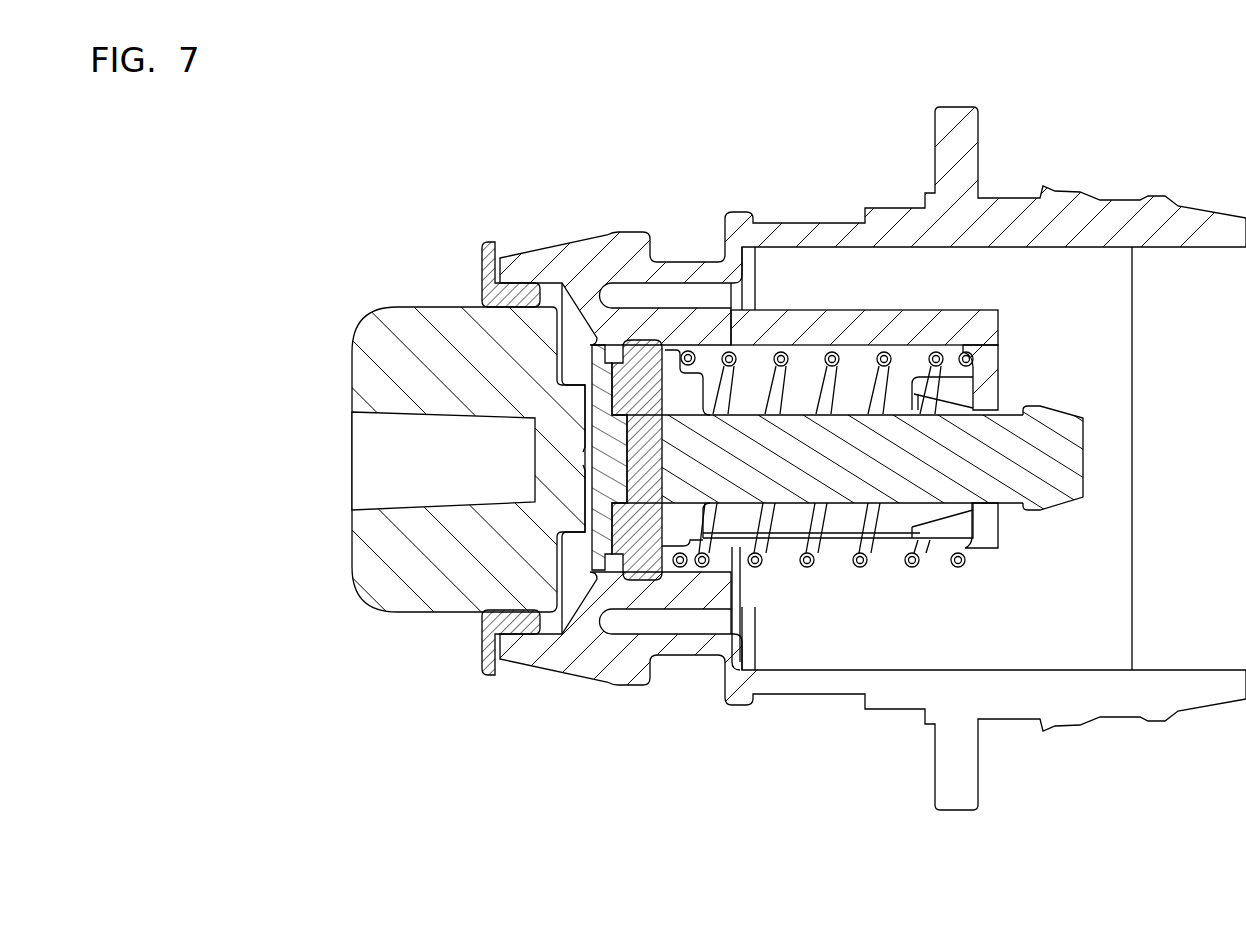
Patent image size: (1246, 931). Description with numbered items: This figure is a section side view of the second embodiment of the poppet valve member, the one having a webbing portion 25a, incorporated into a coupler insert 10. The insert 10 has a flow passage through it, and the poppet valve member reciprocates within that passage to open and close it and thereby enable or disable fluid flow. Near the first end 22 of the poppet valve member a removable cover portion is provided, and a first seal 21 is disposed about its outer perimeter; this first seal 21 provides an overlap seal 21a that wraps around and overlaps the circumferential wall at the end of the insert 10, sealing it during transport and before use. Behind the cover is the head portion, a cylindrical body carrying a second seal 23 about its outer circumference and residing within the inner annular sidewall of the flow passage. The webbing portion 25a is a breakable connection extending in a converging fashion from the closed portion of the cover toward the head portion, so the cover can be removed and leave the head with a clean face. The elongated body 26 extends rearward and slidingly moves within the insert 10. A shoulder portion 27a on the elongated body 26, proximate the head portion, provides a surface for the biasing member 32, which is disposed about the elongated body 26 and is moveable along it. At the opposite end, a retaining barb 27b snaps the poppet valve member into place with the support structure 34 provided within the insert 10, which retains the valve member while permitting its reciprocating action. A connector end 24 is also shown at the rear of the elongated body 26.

The coupler insert 10 is at (991, 187).
The first seal 21 is at (515, 283).
The overlap seal 21a is at (481, 266).
The first end 22 is at (378, 371).
The second seal 23 is at (649, 583).
The shaft end 24 is at (1085, 443).
The webbing portion 25a is at (590, 463).
The elongated body 26 is at (905, 482).
The shoulder portion 27a is at (703, 528).
The retaining barb 27b is at (1032, 407).
The biasing member 32 is at (782, 352).
The support structure 34 is at (898, 317).